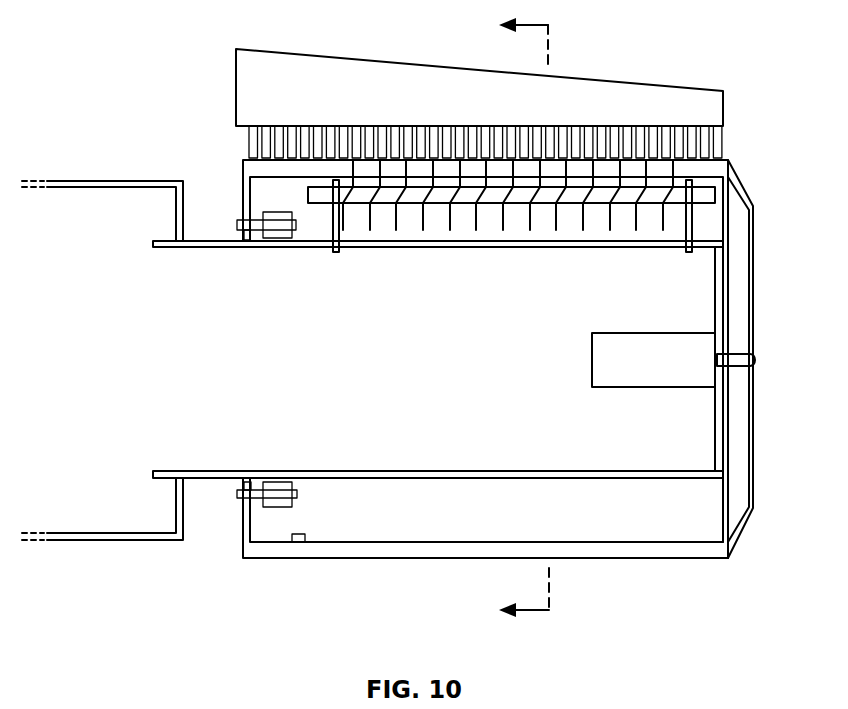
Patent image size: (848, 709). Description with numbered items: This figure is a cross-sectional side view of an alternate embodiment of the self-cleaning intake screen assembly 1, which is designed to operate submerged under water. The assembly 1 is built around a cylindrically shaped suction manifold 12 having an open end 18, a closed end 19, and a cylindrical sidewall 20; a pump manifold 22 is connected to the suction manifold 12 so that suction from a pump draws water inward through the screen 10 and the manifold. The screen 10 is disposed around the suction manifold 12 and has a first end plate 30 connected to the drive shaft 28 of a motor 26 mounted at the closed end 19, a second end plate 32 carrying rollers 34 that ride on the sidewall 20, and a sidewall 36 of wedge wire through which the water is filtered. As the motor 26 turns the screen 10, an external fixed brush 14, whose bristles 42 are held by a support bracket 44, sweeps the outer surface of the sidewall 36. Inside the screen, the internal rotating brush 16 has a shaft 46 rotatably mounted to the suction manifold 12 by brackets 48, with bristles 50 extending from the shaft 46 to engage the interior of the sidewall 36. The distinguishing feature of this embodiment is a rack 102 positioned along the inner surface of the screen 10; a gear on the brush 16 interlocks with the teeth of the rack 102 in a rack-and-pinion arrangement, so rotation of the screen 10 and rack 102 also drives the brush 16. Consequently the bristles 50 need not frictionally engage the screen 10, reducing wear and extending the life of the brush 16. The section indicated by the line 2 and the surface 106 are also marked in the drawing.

The self-cleaning intake screen assembly 1 is at (110, 84).
The section line 2 is at (515, 322).
The screen 10 is at (575, 572).
The suction manifold 12 is at (378, 470).
The external fixed brush 14 is at (736, 115).
The internal rotating brush 16 is at (462, 214).
The open end 18 is at (144, 382).
The closed end 19 is at (715, 310).
The cylindrical sidewall 20 is at (583, 250).
The pump manifold 22 is at (108, 542).
The motor 26 is at (666, 370).
The drive shaft 28 is at (749, 360).
The first end plate 30 is at (753, 275).
The second end plate 32 is at (243, 190).
The rollers 34 is at (288, 507).
The sidewall 36 is at (447, 559).
The bristles 42 is at (248, 143).
The support bracket 44 is at (236, 83).
The shaft 46 is at (407, 204).
The brackets 48 is at (333, 238).
The bristles 50 is at (503, 221).
The rack 102 is at (307, 538).
The inner surface of lower wall 106 is at (415, 541).